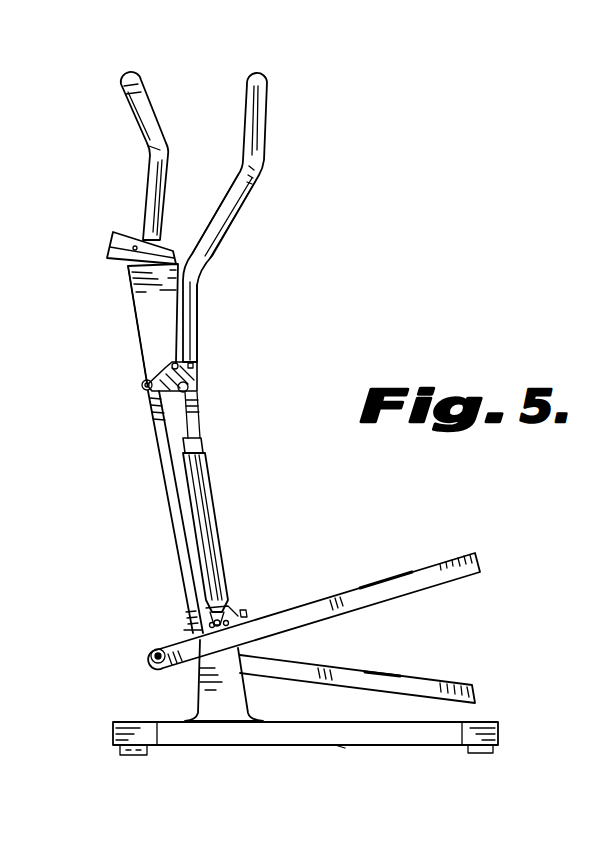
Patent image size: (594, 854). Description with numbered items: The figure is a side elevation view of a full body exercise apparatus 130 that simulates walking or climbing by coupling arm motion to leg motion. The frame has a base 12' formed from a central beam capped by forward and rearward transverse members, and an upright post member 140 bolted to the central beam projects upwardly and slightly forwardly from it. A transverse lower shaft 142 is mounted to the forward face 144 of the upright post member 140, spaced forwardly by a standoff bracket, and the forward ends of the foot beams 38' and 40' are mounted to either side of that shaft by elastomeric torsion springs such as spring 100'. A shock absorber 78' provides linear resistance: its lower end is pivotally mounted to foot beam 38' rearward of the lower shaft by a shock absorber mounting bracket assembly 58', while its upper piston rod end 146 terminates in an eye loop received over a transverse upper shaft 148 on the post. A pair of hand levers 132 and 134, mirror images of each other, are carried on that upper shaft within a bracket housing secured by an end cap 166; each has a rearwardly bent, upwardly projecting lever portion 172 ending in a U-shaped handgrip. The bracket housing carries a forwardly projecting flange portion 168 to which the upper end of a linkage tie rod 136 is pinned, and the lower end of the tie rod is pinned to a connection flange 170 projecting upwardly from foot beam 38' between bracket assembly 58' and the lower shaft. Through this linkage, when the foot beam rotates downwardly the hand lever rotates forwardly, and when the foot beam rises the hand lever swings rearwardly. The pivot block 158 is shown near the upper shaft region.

The full body exercise apparatus 130 is at (339, 274).
The hand lever 134 is at (125, 104).
The hand lever 132 is at (270, 99).
The lever portion 172 is at (208, 229).
The upright post member 140 is at (140, 290).
The forward face 144 is at (140, 340).
The pivot block 158 is at (201, 362).
The transverse upper shaft 148 is at (182, 372).
The upper piston rod end 146 is at (190, 396).
The flange portion 168 is at (142, 384).
The end cap 166 is at (152, 420).
The linkage tie rod 136 is at (166, 478).
The shock absorber 78' is at (229, 509).
The shock absorber mounting bracket assembly 58' is at (248, 594).
The foot beam 38' is at (314, 601).
The foot beam 40' is at (357, 657).
The connection flange 170 is at (185, 632).
The elastomeric torsion spring 100' is at (99, 653).
The transverse lower shaft 142 is at (152, 662).
The base 12' is at (305, 752).